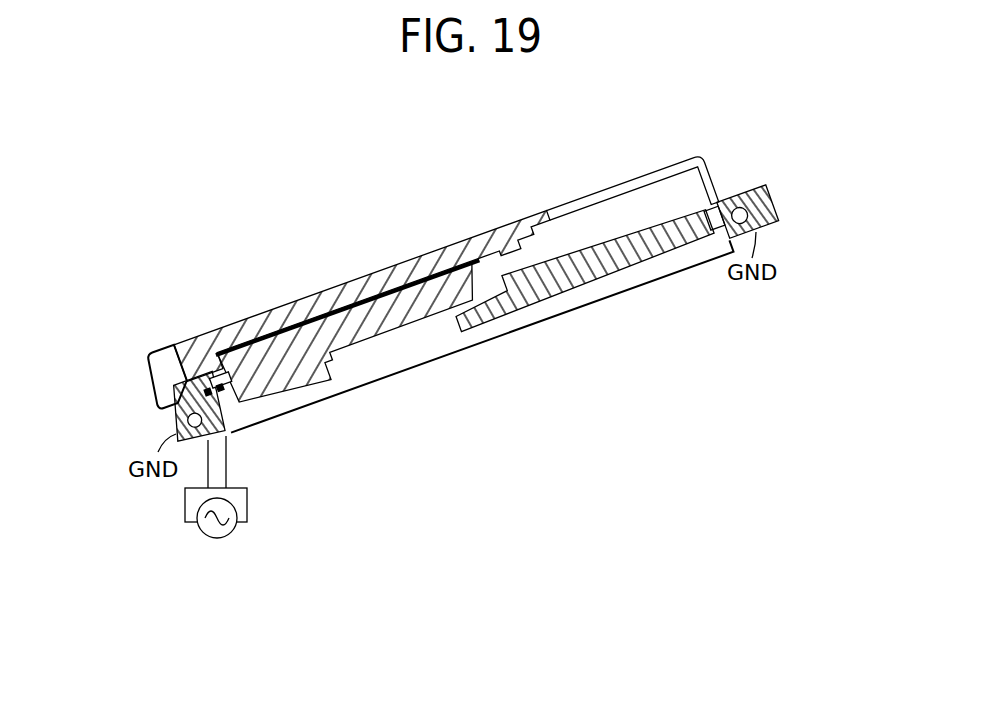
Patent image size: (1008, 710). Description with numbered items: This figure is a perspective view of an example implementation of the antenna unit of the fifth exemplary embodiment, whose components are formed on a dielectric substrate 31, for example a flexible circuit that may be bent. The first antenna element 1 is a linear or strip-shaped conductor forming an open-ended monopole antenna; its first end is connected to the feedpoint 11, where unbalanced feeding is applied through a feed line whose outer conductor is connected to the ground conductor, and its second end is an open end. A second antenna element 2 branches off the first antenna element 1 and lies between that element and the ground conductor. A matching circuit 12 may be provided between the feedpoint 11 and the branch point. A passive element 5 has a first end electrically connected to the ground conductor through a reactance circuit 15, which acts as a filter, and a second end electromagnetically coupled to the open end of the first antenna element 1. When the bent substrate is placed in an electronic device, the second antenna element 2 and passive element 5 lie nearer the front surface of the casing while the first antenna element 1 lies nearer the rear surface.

The first antenna element 1 is at (243, 322).
The second antenna element 2 is at (362, 298).
The passive element 5 is at (585, 272).
The feedpoint 11 is at (216, 539).
The matching circuit 12 is at (248, 386).
The reactance circuit 15 is at (721, 203).
The dielectric substrate 31 is at (412, 352).